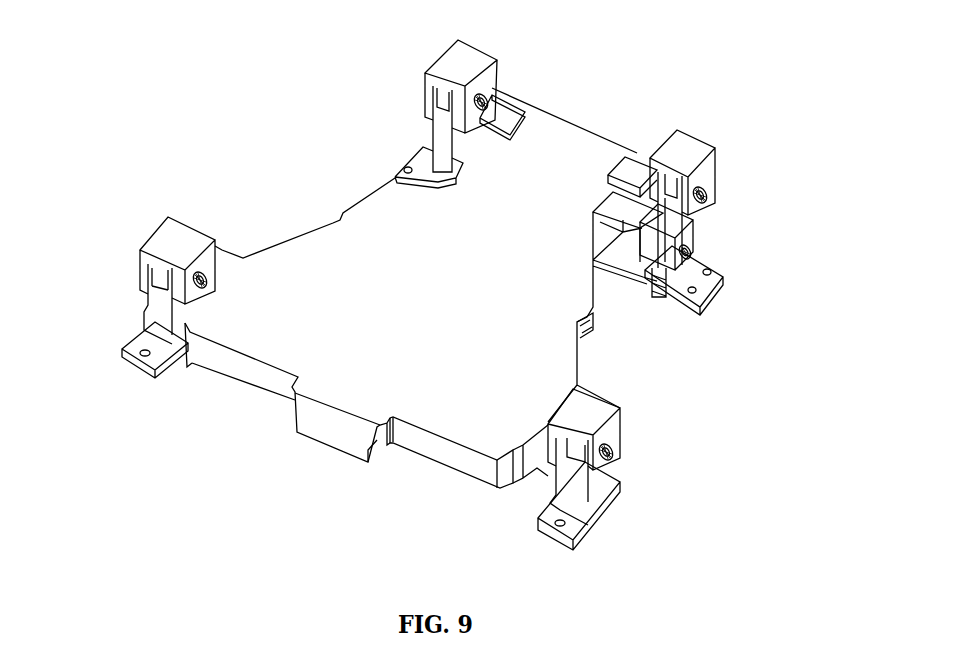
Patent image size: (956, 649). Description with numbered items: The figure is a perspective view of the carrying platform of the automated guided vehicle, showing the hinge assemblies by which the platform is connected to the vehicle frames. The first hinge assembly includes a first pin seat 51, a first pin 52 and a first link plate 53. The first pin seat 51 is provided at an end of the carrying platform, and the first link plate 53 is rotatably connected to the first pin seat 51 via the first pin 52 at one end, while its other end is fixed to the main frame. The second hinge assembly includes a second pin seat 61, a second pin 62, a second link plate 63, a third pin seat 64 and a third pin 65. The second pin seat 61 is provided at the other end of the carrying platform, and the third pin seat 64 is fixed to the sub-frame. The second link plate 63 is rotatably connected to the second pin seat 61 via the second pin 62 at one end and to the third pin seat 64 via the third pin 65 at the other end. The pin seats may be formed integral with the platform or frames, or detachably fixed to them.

The first pin seat 51 is at (162, 243).
The first pin 52 is at (212, 290).
The first link plate 53 is at (155, 322).
The second pin seat 61 is at (450, 63).
The second pin 62 is at (497, 93).
The second link plate 63 is at (438, 127).
The third pin seat 64 is at (413, 165).
The third pin 65 is at (713, 265).